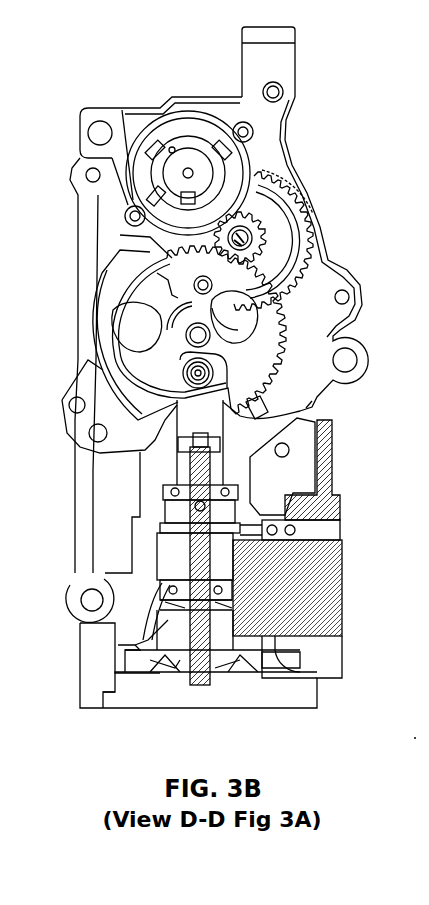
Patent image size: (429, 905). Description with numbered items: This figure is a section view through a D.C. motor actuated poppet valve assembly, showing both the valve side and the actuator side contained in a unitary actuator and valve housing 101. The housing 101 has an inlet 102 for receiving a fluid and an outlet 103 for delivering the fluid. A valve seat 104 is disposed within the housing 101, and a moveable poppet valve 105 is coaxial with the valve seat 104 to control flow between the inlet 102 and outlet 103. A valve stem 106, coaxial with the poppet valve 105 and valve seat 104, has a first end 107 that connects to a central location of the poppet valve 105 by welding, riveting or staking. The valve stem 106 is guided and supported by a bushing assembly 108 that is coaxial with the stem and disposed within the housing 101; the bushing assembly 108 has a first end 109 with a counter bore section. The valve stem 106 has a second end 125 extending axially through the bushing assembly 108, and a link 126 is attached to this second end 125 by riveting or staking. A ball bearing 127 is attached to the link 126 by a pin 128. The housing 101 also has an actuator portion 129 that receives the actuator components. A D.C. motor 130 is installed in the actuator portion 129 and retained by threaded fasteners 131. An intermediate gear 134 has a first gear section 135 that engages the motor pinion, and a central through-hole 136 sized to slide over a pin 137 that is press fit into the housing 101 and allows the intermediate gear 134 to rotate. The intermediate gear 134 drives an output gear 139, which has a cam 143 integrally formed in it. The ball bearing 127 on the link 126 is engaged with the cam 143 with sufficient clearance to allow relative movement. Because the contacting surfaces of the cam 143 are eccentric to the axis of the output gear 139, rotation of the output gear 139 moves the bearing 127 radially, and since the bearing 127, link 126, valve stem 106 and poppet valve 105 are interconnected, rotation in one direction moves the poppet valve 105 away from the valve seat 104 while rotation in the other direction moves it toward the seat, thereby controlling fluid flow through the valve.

The actuator and valve housing 101 is at (332, 462).
The inlet 102 is at (257, 687).
The outlet 103 is at (314, 606).
The valve seat 104 is at (130, 657).
The poppet valve 105 is at (168, 685).
The valve stem 106 is at (188, 612).
The first end 107 is at (202, 687).
The bushing assembly 108 is at (168, 563).
The first end 109 is at (170, 590).
The second end 125 is at (186, 458).
The link 126 is at (175, 425).
The ball bearing 127 is at (72, 424).
The pin 128 is at (190, 371).
The actuator portion 129 is at (120, 266).
The D.C. motor 130 is at (150, 158).
The threaded fasteners 131 is at (240, 122).
The intermediate gear 134 is at (276, 216).
The first gear section 135 is at (278, 176).
The central through-hole 136 is at (266, 232).
The pin 137 is at (252, 238).
The output gear 139 is at (262, 315).
The cam 143 is at (236, 382).